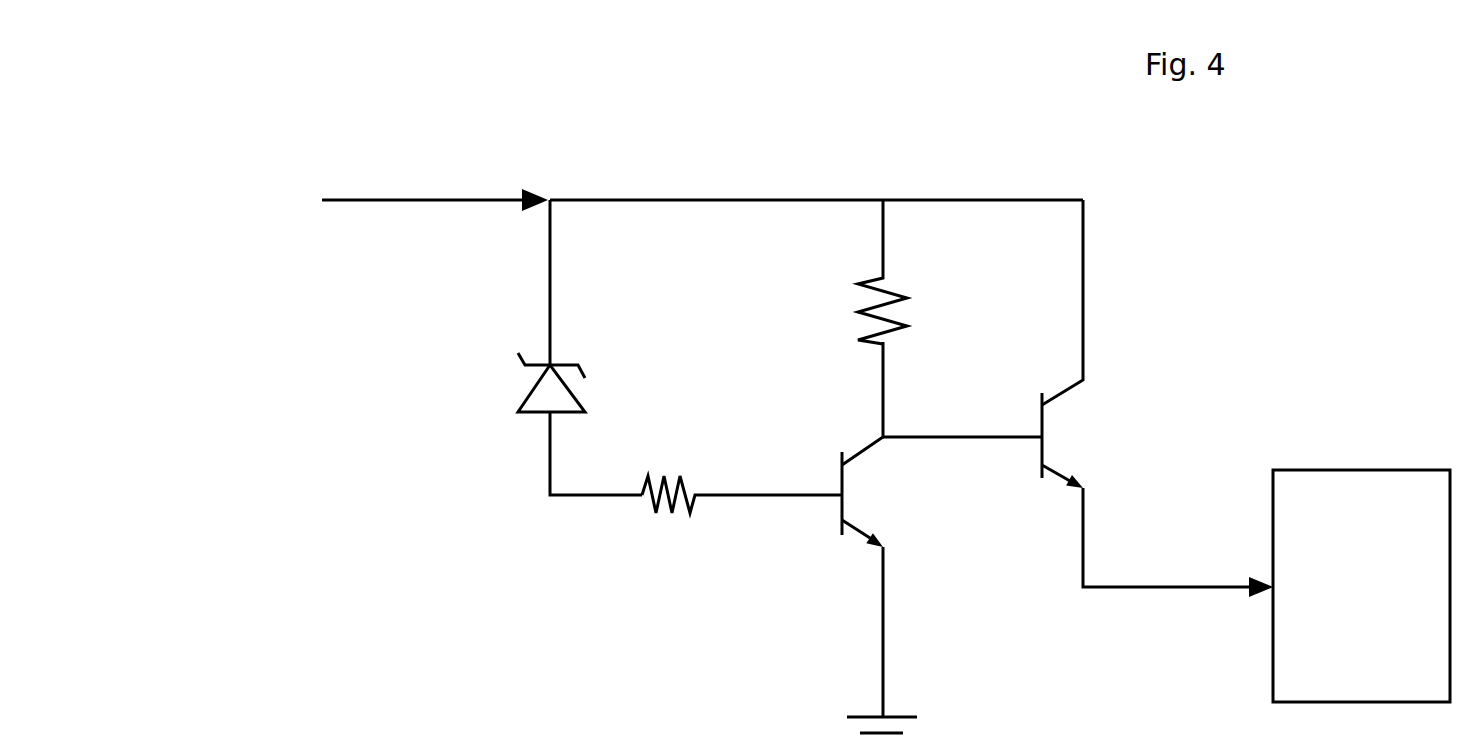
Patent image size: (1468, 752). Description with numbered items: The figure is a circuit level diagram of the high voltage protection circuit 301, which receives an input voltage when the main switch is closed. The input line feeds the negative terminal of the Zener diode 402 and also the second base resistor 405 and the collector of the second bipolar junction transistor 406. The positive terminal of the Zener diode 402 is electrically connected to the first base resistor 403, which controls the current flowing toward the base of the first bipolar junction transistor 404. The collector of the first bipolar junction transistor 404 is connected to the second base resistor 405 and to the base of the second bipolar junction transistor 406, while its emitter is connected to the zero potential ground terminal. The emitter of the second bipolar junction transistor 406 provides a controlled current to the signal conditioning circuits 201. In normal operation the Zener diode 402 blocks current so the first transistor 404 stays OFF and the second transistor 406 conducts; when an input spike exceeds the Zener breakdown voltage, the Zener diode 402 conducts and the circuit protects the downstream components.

The high voltage protection circuit 301 is at (244, 141).
The Zener diode 402 is at (528, 418).
The first base resistor 403 is at (668, 515).
The first bipolar junction transistor 404 is at (832, 530).
The second base resistor 405 is at (852, 285).
The second bipolar junction transistor 406 is at (1040, 405).
The signal conditioning circuits 201 is at (1413, 467).